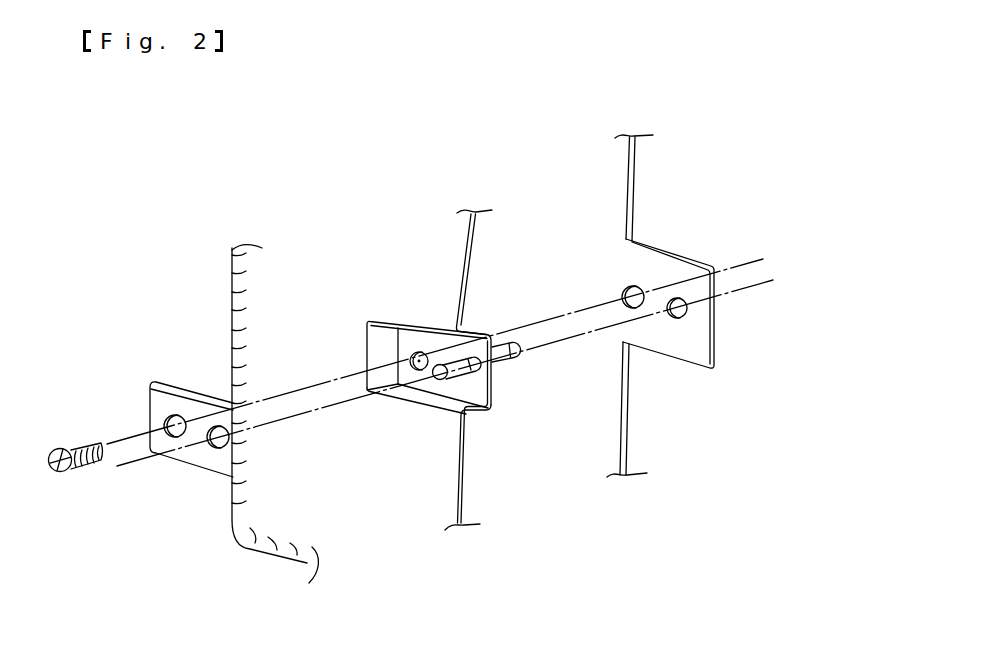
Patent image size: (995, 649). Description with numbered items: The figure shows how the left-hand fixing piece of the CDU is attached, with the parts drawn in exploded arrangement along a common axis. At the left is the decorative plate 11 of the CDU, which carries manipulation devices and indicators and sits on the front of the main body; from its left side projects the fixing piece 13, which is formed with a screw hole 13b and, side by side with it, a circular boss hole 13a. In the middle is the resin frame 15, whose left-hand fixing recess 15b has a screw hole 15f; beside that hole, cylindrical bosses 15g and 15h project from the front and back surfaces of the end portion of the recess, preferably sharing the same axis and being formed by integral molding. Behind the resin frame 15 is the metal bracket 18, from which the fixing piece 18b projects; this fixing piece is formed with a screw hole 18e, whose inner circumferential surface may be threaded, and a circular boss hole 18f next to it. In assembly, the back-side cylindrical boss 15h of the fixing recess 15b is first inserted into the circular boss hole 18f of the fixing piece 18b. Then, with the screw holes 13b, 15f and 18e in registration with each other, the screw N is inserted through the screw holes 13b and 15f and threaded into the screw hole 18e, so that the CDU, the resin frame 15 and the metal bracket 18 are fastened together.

The decorative plate 11 is at (231, 327).
The fixing piece 13 is at (163, 377).
The circular boss hole 13a is at (215, 449).
The screw hole 13b is at (166, 427).
The screw N is at (62, 475).
The resin frame 15 is at (474, 238).
The fixing recess 15b is at (380, 320).
The screw hole 15f is at (422, 351).
The cylindrical boss 15g is at (462, 413).
The cylindrical boss 15h is at (505, 372).
The metal bracket 18 is at (637, 163).
The fixing piece 18b is at (695, 257).
The screw hole 18e is at (638, 291).
The circular boss hole 18f is at (683, 318).